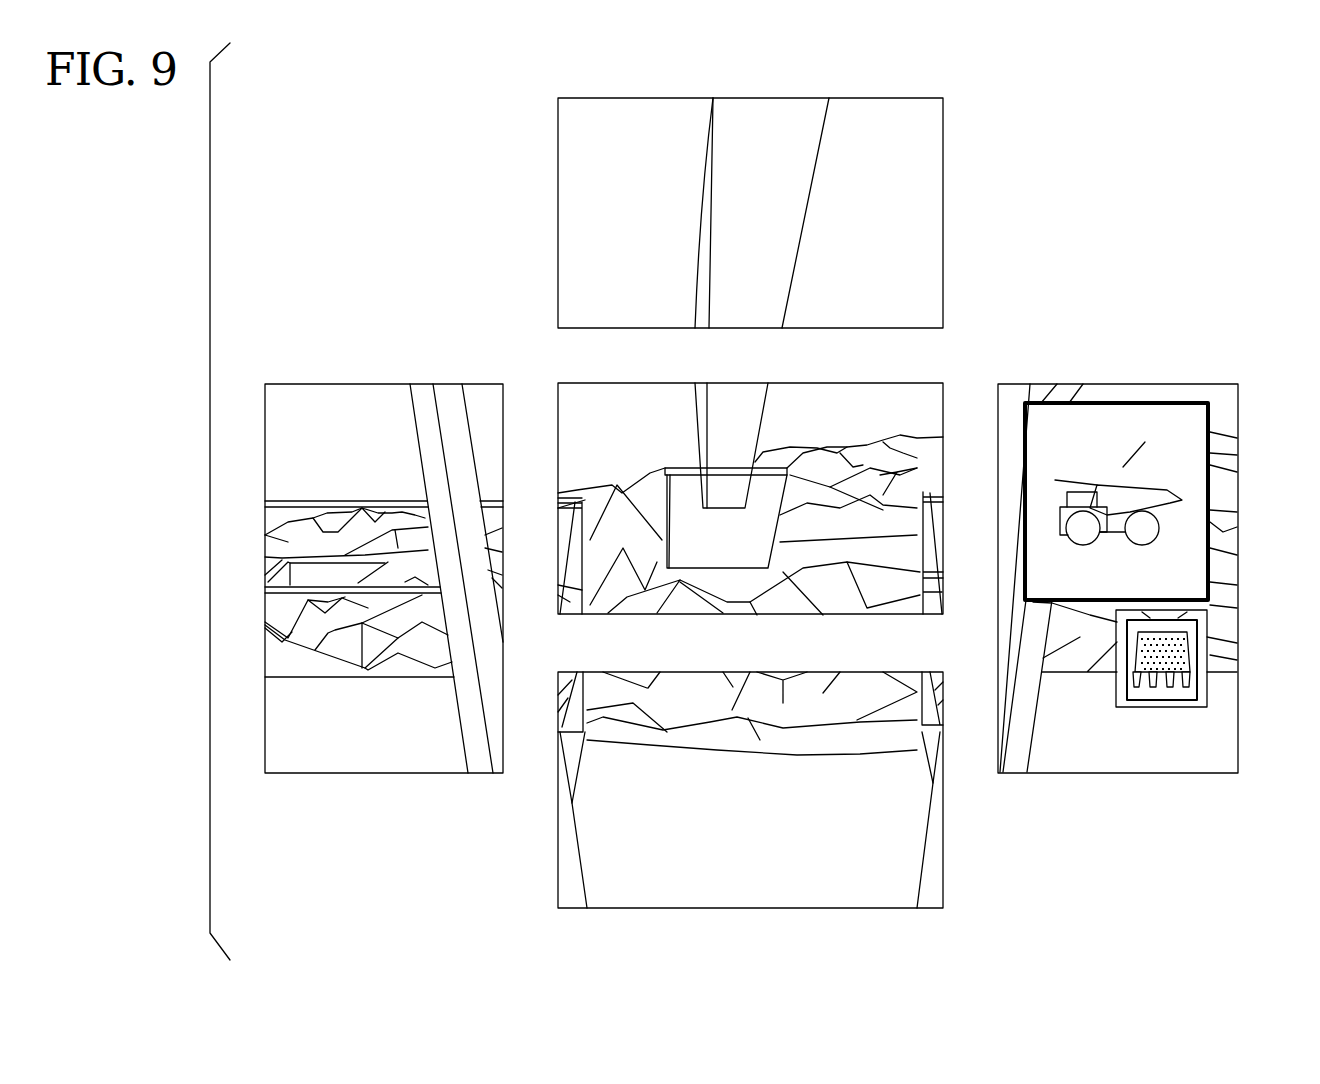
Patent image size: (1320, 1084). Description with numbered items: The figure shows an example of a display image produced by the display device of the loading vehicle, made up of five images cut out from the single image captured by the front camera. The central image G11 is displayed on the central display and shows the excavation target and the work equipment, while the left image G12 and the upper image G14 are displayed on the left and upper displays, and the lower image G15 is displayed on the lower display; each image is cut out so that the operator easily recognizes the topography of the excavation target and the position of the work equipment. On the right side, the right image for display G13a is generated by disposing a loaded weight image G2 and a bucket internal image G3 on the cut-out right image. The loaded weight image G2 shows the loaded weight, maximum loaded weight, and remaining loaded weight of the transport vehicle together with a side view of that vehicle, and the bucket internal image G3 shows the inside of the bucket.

The upper image G14 is at (856, 98).
The left image G12 is at (371, 384).
The central image G11 is at (921, 384).
The lower image G15 is at (668, 908).
The right image for display G13a is at (1147, 549).
The loaded weight image G2 is at (1148, 402).
The bucket internal image G3 is at (1208, 658).